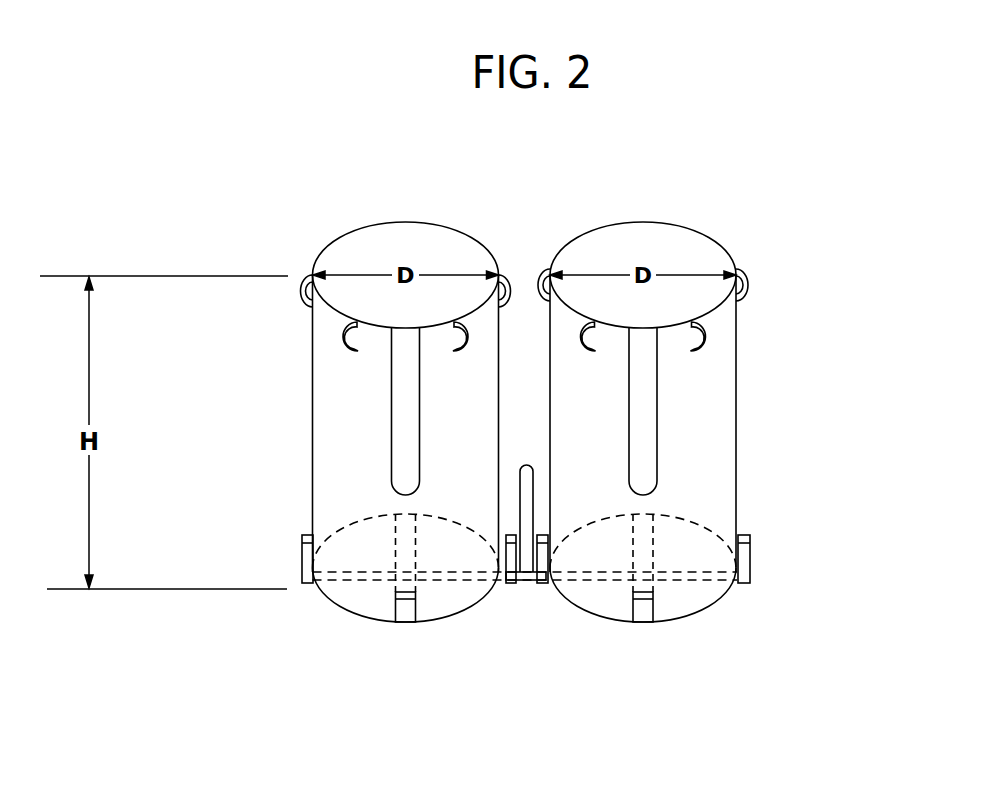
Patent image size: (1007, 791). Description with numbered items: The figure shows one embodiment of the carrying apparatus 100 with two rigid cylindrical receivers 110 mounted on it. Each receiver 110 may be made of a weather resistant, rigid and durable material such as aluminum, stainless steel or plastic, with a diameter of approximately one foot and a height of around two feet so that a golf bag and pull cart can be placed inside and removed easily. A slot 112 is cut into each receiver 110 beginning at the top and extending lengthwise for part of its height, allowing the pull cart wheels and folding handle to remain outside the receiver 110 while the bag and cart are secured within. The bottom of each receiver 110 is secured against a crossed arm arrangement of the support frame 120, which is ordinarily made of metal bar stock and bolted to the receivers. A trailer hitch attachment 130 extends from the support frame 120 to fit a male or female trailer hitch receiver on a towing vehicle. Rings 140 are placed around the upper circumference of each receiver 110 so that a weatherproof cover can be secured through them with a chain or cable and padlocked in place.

The carrying apparatus 100 is at (771, 209).
The receiver 110 is at (335, 245).
The slot 112 is at (393, 440).
The support frame 120 is at (518, 579).
The trailer hitch attachment 130 is at (535, 478).
The rings 140 is at (343, 342).